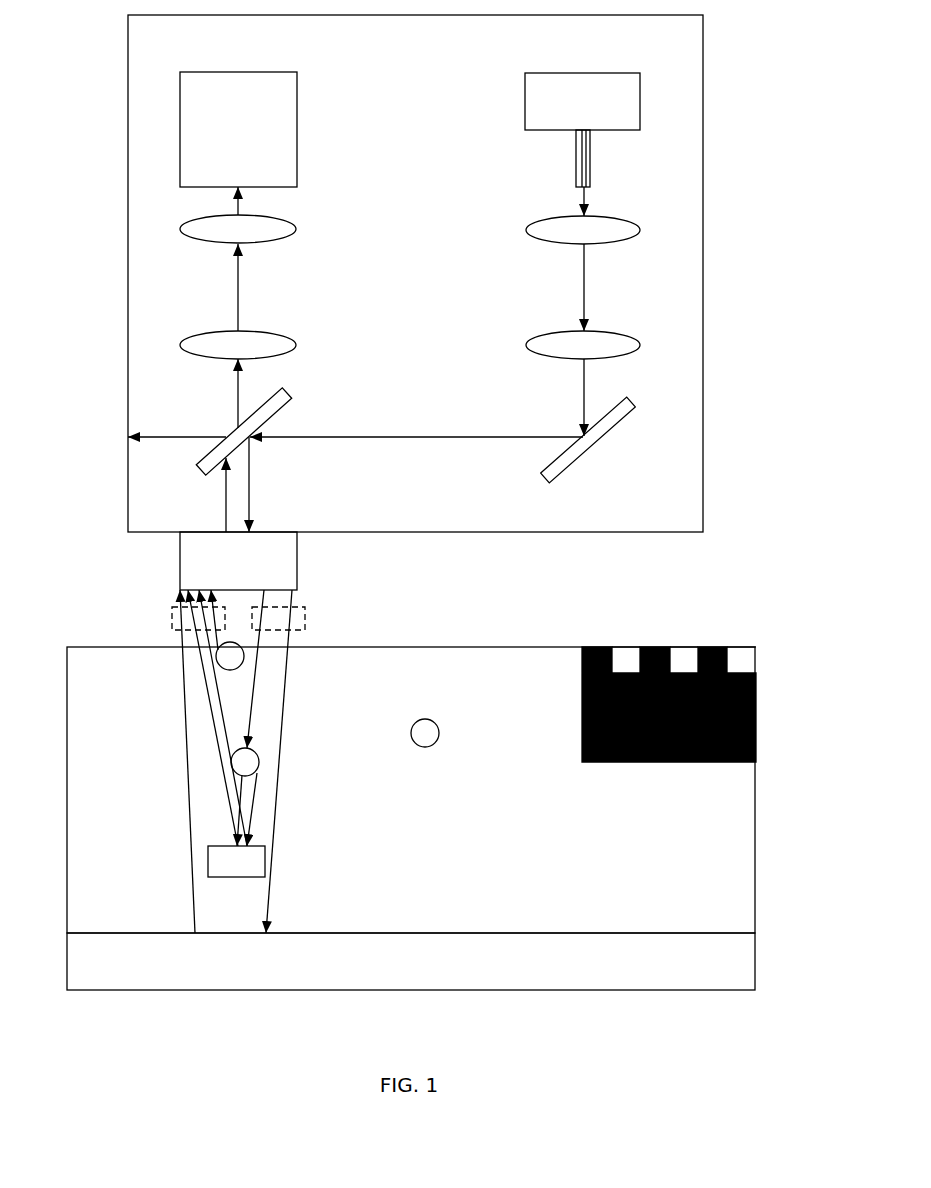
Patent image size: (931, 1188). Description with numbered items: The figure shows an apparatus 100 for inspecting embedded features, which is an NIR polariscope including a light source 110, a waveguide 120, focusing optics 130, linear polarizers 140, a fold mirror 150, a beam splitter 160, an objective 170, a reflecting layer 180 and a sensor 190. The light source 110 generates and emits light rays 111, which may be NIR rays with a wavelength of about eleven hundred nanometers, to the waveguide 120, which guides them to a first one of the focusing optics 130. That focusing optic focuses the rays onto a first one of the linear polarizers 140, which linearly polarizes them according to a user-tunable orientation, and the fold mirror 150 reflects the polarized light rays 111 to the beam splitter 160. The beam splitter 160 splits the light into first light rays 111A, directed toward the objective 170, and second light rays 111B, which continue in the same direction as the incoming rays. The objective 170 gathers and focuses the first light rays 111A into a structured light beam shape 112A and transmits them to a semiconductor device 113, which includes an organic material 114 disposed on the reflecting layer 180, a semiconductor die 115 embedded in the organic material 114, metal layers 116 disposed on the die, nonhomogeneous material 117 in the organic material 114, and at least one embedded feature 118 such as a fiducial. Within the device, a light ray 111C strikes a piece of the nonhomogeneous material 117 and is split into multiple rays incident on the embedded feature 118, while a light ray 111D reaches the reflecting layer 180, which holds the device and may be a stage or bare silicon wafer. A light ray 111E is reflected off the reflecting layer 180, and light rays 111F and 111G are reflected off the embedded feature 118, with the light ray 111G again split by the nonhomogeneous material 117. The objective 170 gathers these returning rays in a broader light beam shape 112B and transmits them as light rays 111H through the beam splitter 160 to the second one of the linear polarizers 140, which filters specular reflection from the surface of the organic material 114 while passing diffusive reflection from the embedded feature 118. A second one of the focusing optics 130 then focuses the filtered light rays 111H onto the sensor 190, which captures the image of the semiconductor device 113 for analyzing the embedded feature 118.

The apparatus 100 is at (128, 75).
The light source 110 is at (525, 100).
The light rays 111 is at (587, 195).
The first light rays 111A is at (252, 485).
The second light rays 111B is at (180, 435).
The light ray 111C is at (252, 712).
The light ray 111D is at (278, 787).
The light ray 111E is at (195, 897).
The light ray 111F is at (223, 803).
The light ray 111G is at (225, 720).
The light rays 111H is at (226, 503).
The light beam shape 112A is at (305, 618).
The light beam shape 112B is at (172, 618).
The semiconductor device 113 is at (742, 570).
The organic material 114 is at (468, 647).
The semiconductor die 115 is at (668, 762).
The metal layers 116 is at (627, 647).
The nonhomogeneous material 117 is at (244, 655).
The embedded feature 118 is at (238, 877).
The waveguide 120 is at (576, 158).
The focusing optics 130 is at (526, 230).
The linear polarizers 140 is at (526, 345).
The fold mirror 150 is at (548, 467).
The beam splitter 160 is at (288, 394).
The objective 170 is at (297, 560).
The reflecting layer 180 is at (583, 990).
The sensor 190 is at (297, 127).